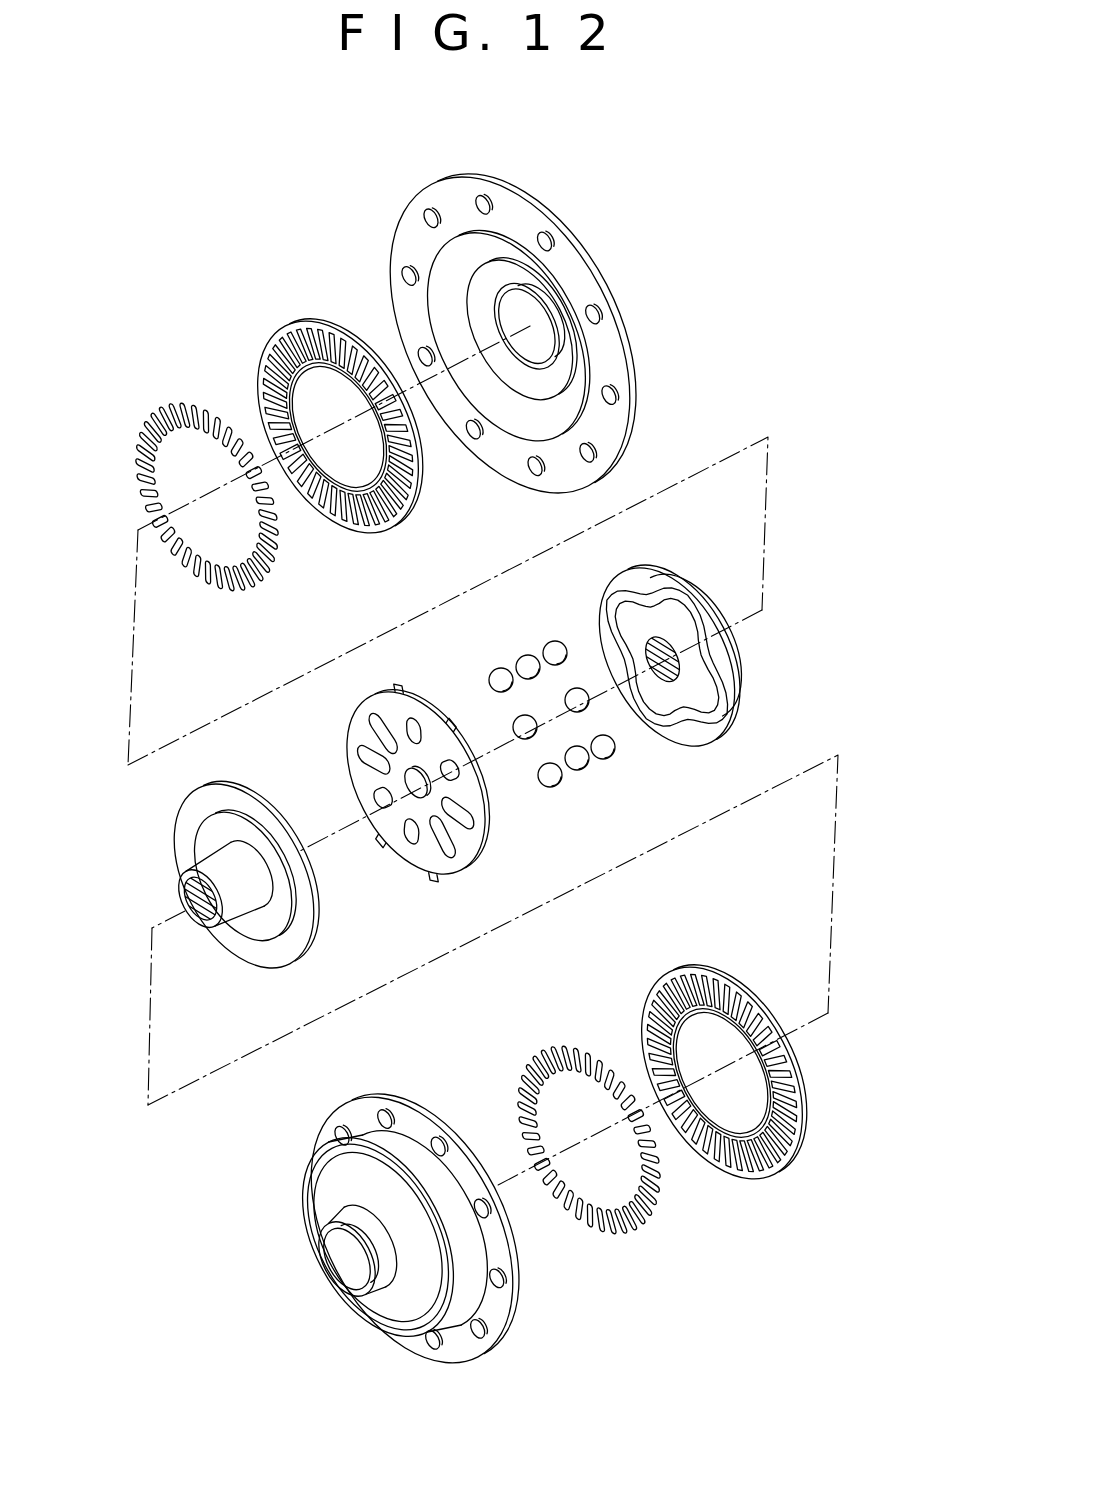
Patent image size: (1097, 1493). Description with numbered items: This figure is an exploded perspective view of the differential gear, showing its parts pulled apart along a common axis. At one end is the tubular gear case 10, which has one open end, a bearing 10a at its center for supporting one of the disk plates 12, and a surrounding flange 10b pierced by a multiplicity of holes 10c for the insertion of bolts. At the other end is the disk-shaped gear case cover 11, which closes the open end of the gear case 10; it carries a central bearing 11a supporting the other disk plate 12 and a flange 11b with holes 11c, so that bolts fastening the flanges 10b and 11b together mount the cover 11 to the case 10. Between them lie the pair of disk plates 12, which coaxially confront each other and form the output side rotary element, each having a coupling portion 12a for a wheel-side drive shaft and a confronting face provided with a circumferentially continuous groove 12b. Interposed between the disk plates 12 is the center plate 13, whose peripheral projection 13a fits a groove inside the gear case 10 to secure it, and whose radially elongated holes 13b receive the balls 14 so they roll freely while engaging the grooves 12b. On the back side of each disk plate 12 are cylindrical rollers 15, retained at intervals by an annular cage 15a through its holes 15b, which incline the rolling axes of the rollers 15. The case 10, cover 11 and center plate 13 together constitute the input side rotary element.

The gear case 10 is at (414, 1228).
The bearing 10a is at (338, 1267).
The flange 10b is at (498, 1300).
The holes 10c is at (332, 1132).
The gear case cover 11 is at (531, 332).
The bearing 11a is at (518, 306).
The flange 11b is at (613, 424).
The holes 11c is at (532, 472).
The disk plates 12 is at (456, 800).
The coupling portion 12a is at (206, 928).
The grooves 12b is at (728, 716).
The center plate 13 is at (416, 804).
The projection 13a is at (452, 722).
The elongated holes 13b is at (355, 757).
The balls 14 is at (553, 793).
The rollers 15 is at (175, 400).
The cage 15a is at (530, 747).
The holes 15b is at (357, 527).